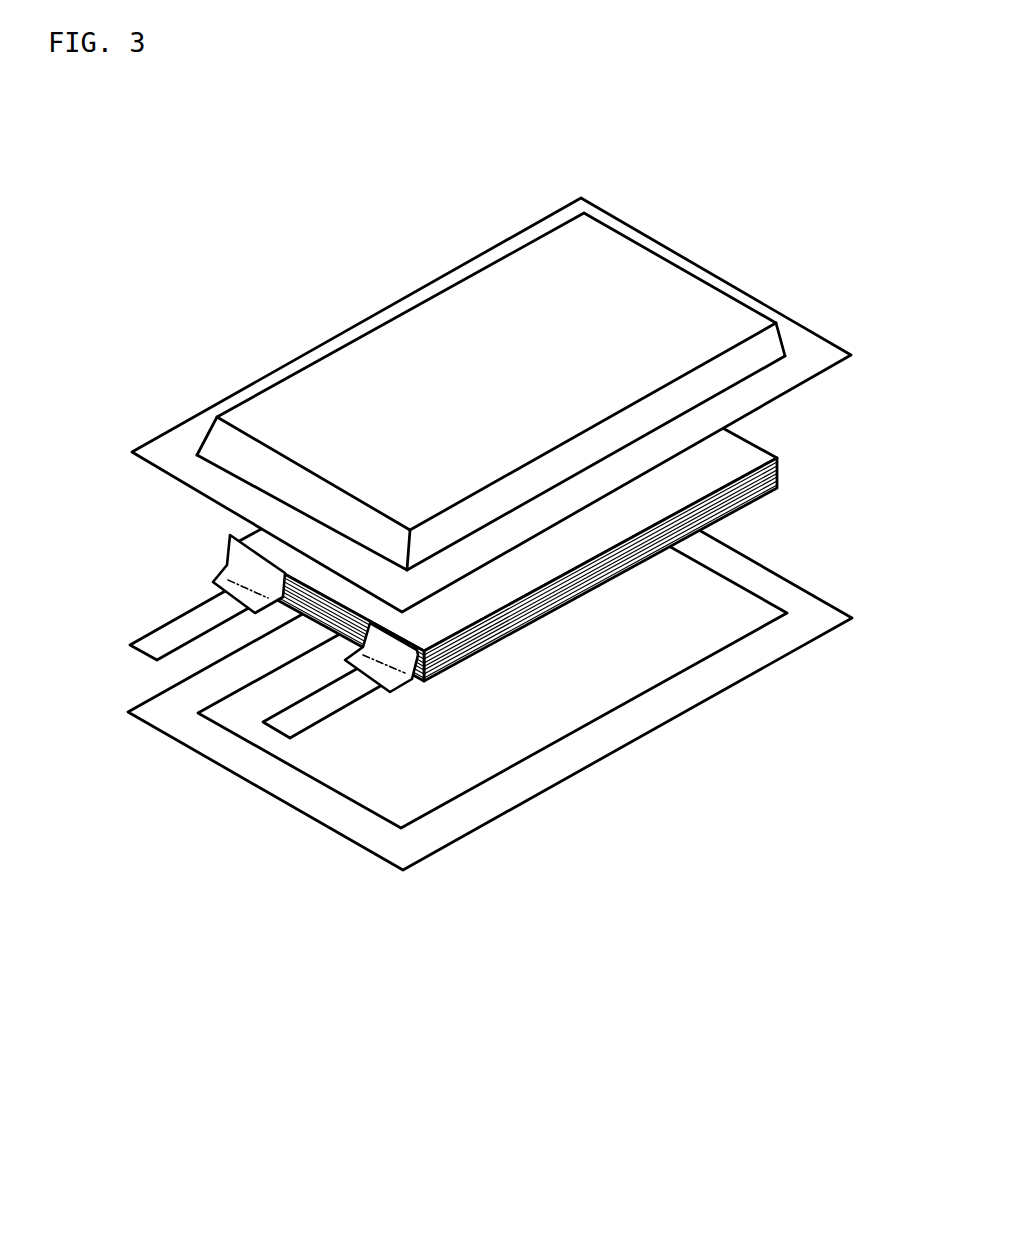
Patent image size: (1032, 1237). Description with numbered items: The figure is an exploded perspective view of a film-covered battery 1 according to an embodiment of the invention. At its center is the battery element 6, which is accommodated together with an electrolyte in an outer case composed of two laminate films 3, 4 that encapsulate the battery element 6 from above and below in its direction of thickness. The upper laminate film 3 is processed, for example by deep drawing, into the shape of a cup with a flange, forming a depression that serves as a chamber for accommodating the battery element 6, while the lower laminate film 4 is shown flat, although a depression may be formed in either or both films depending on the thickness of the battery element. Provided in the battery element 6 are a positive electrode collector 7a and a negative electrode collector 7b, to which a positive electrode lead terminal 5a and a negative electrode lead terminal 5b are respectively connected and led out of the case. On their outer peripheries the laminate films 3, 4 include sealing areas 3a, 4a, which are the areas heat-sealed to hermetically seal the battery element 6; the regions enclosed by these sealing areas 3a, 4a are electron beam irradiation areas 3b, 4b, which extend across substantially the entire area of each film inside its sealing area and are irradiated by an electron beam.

The film-covered battery 1 is at (185, 342).
The laminate film 3 is at (491, 369).
The sealing area 3a is at (800, 338).
The electron beam irradiation area 3b is at (458, 337).
The laminate film 4 is at (490, 719).
The sealing area 4a is at (778, 645).
The electron beam irradiation area 4b is at (577, 677).
The positive electrode lead terminal 5a is at (322, 708).
The negative electrode lead terminal 5b is at (163, 638).
The battery element 6 is at (733, 458).
The positive electrode collector 7a is at (419, 659).
The negative electrode collector 7b is at (246, 568).